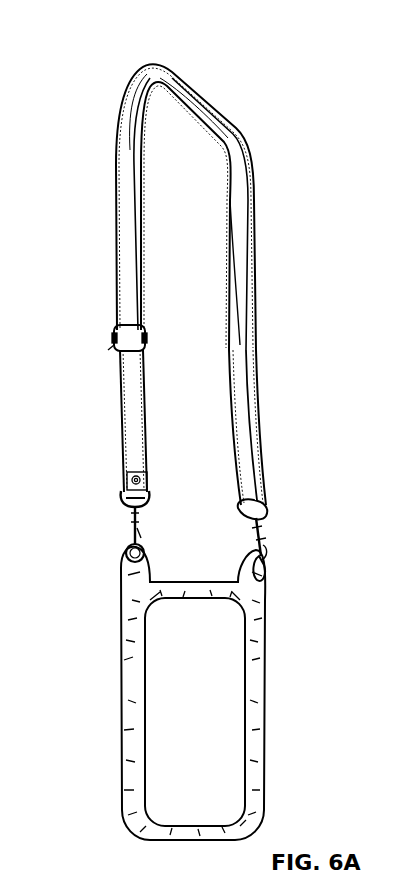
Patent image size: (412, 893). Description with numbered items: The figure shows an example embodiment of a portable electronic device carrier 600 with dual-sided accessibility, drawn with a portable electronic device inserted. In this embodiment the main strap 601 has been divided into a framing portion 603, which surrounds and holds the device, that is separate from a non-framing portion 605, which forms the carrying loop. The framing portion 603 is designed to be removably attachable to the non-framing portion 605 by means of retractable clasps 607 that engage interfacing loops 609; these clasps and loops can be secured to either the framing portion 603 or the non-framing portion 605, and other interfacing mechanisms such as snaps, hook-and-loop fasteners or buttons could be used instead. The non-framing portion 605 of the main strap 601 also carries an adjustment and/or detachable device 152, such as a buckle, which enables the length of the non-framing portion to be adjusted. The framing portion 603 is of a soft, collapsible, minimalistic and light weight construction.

The portable electronic device carrier 600 is at (282, 236).
The main strap 601 is at (252, 452).
The non-framing portion 605 is at (249, 360).
The adjustment and/or detachable device 152 is at (115, 345).
The retractable clasps 607 is at (134, 522).
The interfacing loops 609 is at (127, 554).
The framing portion 603 is at (262, 714).